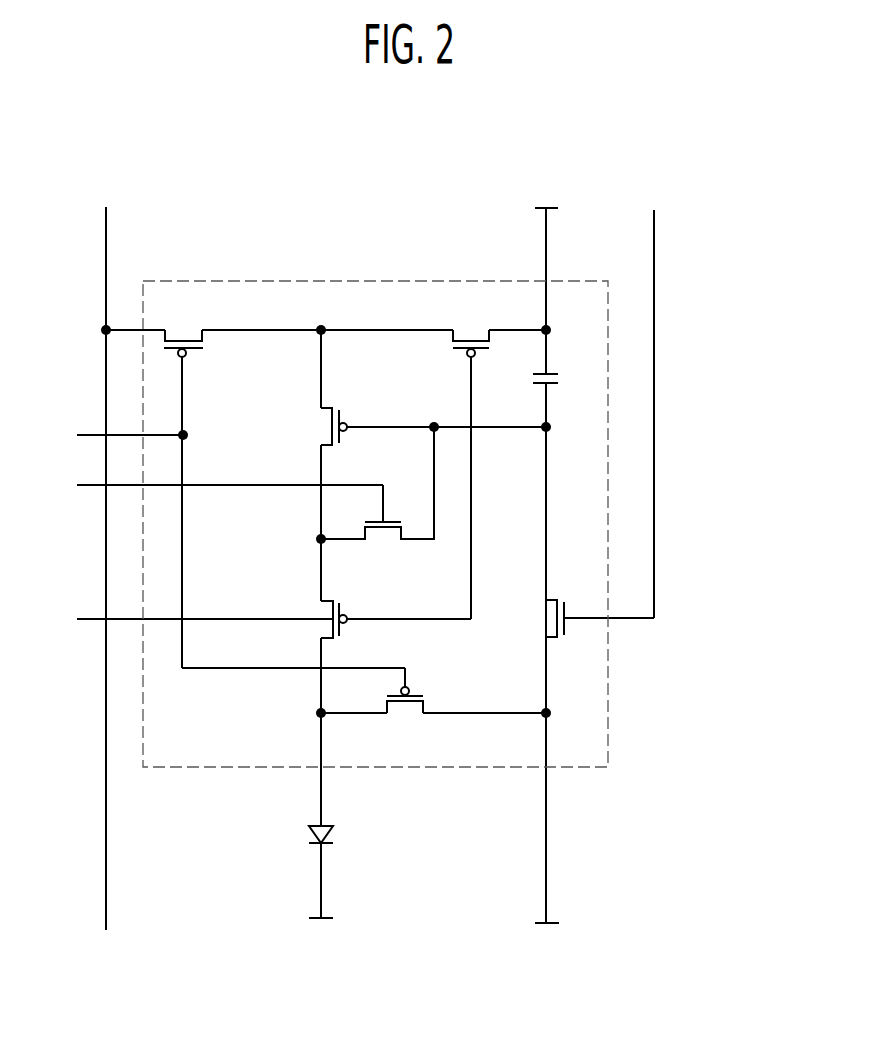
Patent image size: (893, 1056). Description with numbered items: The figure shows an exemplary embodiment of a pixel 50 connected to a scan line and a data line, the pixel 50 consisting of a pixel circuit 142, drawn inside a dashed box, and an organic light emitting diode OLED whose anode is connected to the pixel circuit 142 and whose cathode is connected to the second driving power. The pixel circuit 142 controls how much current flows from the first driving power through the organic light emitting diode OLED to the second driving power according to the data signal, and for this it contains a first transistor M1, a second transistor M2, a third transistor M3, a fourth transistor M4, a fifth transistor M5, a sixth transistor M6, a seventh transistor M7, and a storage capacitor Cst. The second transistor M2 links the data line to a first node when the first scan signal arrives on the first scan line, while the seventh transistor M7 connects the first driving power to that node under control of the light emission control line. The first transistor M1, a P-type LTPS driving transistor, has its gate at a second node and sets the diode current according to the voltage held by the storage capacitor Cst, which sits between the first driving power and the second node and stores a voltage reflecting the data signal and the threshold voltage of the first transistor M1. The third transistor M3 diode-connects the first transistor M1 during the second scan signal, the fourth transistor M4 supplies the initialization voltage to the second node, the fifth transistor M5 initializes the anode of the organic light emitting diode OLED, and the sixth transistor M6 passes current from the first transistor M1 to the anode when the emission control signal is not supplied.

The pixel 50 is at (705, 154).
The pixel circuit 142 is at (398, 279).
The first transistor M1 is at (311, 426).
The second transistor M2 is at (182, 325).
The third transistor M3 is at (377, 499).
The fourth transistor M4 is at (528, 618).
The fifth transistor M5 is at (407, 716).
The sixth transistor M6 is at (306, 611).
The seventh transistor M7 is at (471, 325).
The storage capacitor Cst is at (563, 379).
The organic light emitting diode OLED is at (295, 834).